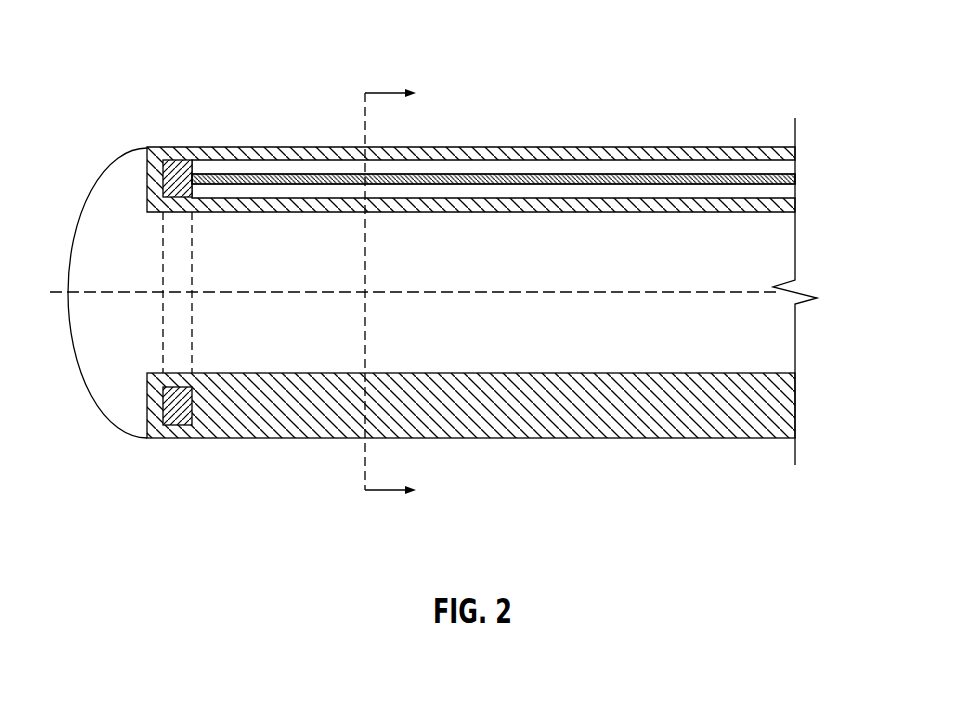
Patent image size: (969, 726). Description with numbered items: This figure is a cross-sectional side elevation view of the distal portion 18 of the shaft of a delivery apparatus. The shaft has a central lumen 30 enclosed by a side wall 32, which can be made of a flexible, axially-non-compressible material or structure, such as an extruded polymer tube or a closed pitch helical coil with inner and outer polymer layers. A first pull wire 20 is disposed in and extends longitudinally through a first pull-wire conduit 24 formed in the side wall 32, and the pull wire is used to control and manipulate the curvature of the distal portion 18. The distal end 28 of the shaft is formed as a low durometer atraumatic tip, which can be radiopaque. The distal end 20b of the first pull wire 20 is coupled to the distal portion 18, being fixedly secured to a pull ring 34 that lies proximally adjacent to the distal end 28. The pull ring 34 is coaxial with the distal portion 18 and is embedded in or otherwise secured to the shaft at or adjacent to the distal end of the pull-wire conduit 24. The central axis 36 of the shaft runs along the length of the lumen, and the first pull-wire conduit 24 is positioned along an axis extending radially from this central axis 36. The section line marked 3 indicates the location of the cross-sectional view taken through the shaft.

The distal portion 18 is at (442, 285).
The first pull wire 20 is at (797, 183).
The distal end of the first pull wire 20b is at (202, 175).
The first pull-wire conduit 24 is at (788, 167).
The distal end 28 is at (122, 173).
The central lumen 30 is at (785, 340).
The side wall 32 is at (485, 157).
The pull ring 34 is at (178, 170).
The central axis 36 is at (55, 297).
The section line 3- 3 is at (399, 293).